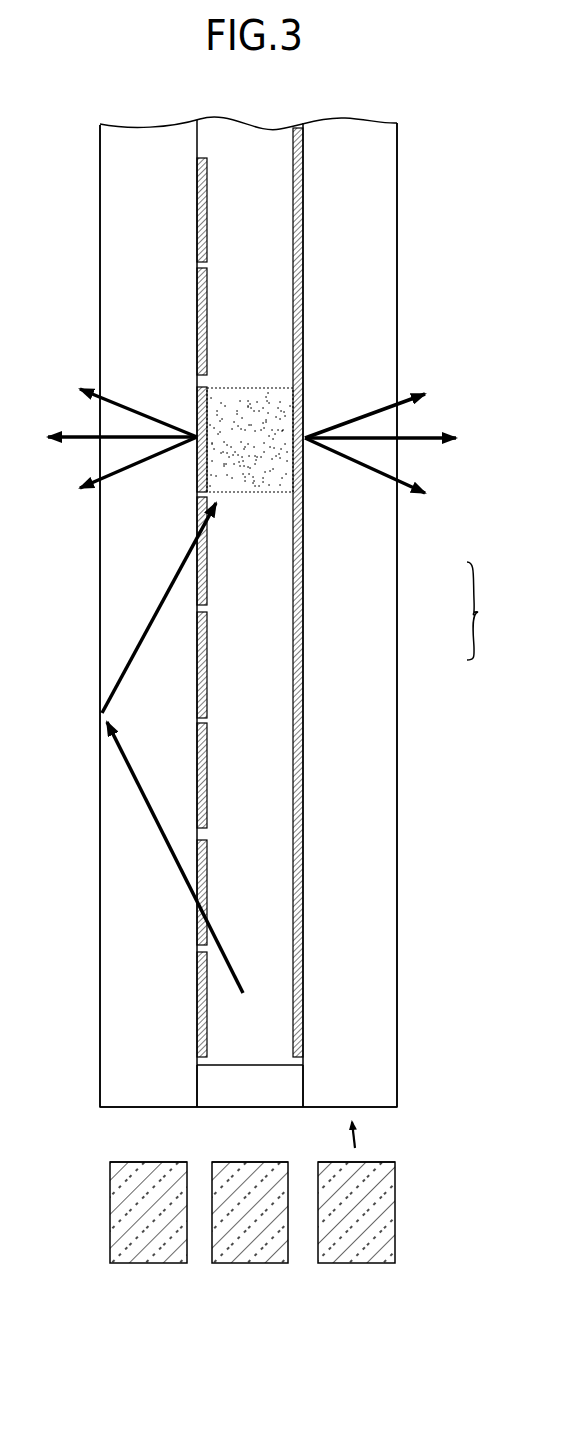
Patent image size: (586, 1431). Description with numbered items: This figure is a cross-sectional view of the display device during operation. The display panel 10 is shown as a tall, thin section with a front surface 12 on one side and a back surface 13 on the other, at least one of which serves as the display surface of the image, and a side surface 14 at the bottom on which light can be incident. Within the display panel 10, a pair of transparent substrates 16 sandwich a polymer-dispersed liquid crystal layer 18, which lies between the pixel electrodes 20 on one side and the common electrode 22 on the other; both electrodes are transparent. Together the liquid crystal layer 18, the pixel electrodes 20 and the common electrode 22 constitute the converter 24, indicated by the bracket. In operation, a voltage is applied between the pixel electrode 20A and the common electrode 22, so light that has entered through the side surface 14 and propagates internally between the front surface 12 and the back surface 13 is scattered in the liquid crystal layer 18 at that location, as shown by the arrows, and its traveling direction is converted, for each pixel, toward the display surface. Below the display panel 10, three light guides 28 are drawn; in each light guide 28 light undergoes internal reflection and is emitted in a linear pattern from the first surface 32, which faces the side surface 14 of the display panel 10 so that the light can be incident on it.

The display panel 10 is at (414, 216).
The front surface 12 is at (397, 312).
The back surface 13 is at (100, 200).
The side surface 14 is at (380, 1107).
The transparent substrates 16 is at (148, 140).
The liquid crystal layer 18 is at (275, 620).
The pixel electrodes 20 is at (207, 675).
The pixel electrode 20A is at (200, 483).
The common electrode 22 is at (303, 578).
The converter 24 is at (133, 1307).
The light guide 28 is at (156, 1255).
The first surface 32 is at (153, 1162).